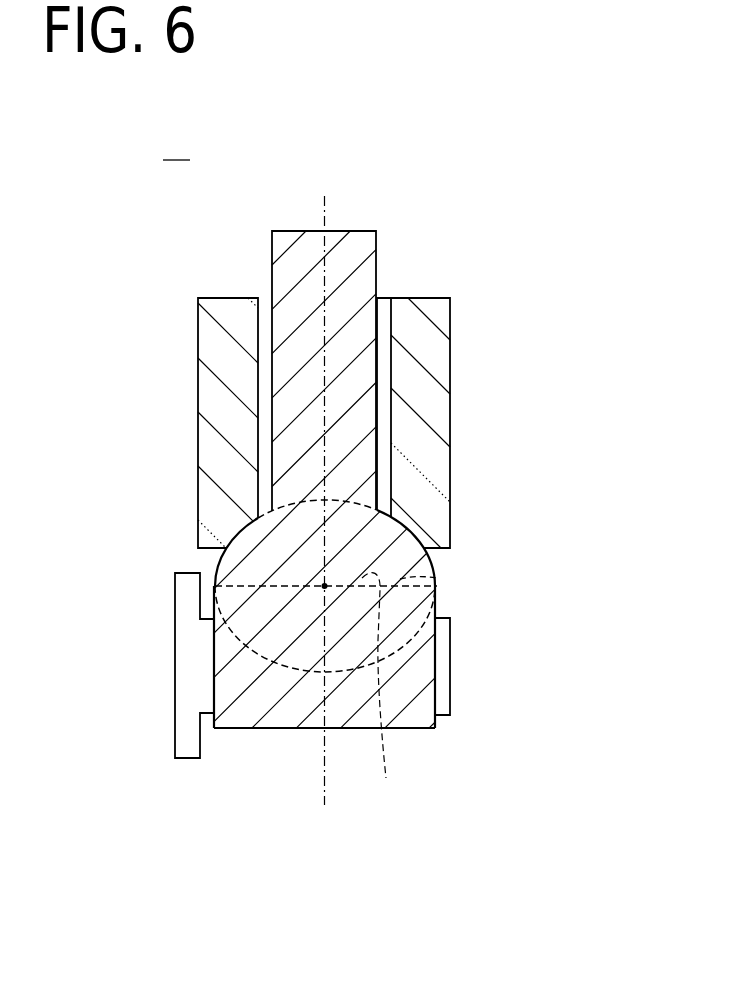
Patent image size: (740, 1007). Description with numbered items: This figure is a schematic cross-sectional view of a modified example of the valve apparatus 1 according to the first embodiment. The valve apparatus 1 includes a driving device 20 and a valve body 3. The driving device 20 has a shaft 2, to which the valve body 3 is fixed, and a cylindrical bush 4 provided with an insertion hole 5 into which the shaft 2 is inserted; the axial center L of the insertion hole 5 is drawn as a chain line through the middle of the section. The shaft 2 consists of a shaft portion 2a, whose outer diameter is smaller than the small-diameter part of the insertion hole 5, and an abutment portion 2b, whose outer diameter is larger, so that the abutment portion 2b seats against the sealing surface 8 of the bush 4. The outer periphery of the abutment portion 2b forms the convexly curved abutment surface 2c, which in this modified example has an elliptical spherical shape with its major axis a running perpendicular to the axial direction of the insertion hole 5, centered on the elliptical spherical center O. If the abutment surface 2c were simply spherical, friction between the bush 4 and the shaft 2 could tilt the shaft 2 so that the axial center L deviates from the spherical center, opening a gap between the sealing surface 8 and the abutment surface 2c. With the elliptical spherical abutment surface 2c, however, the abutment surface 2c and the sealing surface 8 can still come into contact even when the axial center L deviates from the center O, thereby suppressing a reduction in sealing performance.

The valve apparatus 1 is at (176, 148).
The driving device 20 is at (453, 182).
The axial center L is at (325, 486).
The insertion hole 5 is at (270, 375).
The bush 4 is at (438, 335).
The shaft 2 is at (618, 548).
The shaft portion 2a is at (352, 480).
The abutment portion 2b is at (437, 578).
The abutment surface 2c is at (257, 522).
The valve body 3 is at (183, 760).
The sealing surface 8 is at (256, 515).
The elliptical spherical center O is at (323, 587).
The major axis a is at (380, 689).